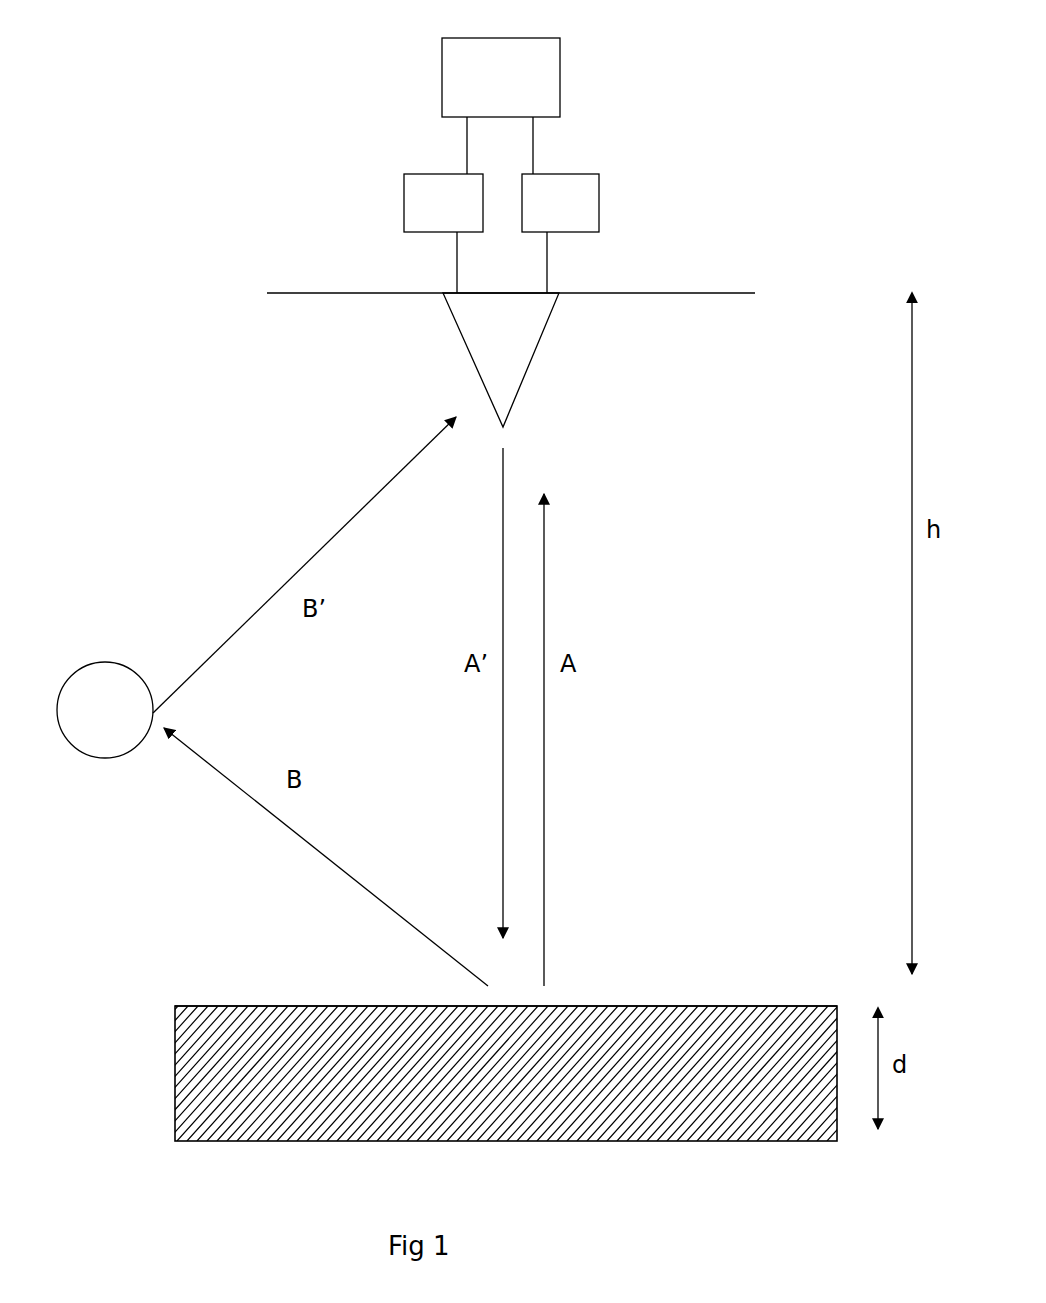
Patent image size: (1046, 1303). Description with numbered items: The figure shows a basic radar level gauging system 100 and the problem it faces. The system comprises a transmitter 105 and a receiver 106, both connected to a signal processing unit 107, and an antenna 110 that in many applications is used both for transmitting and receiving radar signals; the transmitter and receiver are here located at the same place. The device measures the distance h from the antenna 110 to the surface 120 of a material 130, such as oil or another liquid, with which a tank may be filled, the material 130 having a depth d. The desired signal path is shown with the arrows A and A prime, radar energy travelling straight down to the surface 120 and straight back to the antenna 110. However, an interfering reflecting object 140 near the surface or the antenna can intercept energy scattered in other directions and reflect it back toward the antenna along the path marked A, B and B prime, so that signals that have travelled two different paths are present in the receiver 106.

The radar level gauging system 100 is at (776, 250).
The transmitter 105 is at (433, 174).
The receiver 106 is at (599, 196).
The signal processing unit 107 is at (560, 77).
The antenna 110 is at (570, 350).
The surface 120 is at (651, 978).
The material 130 is at (284, 1017).
The interfering reflecting object 140 is at (95, 640).